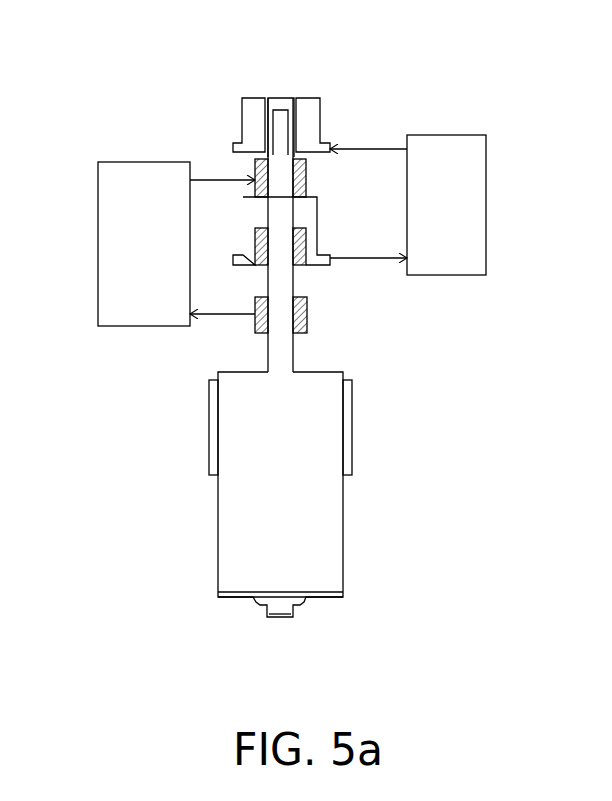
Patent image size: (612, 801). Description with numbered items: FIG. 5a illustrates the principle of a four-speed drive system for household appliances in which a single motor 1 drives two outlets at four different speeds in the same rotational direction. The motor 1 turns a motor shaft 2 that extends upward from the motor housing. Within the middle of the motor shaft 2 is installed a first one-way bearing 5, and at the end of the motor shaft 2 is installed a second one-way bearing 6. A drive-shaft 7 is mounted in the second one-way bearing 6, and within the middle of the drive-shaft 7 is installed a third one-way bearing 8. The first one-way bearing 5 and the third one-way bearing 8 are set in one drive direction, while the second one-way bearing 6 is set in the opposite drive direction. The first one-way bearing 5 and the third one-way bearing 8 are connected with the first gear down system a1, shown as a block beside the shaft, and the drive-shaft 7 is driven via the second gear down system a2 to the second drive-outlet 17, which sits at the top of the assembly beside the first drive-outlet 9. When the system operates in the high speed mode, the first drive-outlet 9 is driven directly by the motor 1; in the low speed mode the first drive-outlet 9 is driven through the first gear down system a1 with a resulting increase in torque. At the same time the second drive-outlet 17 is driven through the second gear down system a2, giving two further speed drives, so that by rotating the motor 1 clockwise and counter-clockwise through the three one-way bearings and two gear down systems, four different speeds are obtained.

The motor 1 is at (295, 455).
The motor shaft 2 is at (286, 350).
The first one-way bearing 5 is at (305, 315).
The second one-way bearing 6 is at (303, 263).
The drive-shaft 7 is at (298, 213).
The third one-way bearing 8 is at (252, 163).
The first drive-outlet 9 is at (295, 95).
The second drive-outlet 17 is at (313, 127).
The first gear down system a1 is at (137, 220).
The second gear down system a2 is at (473, 217).